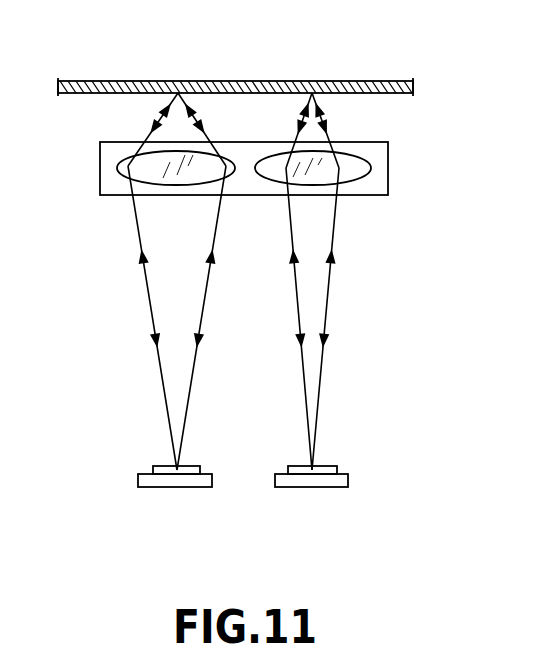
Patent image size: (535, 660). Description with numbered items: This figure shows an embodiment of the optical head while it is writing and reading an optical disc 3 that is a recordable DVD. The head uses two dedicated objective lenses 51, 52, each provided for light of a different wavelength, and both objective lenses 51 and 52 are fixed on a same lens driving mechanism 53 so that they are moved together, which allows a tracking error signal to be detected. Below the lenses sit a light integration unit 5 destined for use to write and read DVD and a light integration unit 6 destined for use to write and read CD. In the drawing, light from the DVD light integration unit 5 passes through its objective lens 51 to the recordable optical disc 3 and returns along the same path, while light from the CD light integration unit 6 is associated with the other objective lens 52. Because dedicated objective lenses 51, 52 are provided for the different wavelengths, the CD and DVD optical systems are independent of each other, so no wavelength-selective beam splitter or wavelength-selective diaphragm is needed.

The optical disc 3 is at (265, 82).
The lens driving mechanism 53 is at (389, 147).
The objective lens 51 is at (147, 173).
The objective lens 52 is at (350, 175).
The light integration unit 5 is at (186, 487).
The light integration unit 6 is at (312, 487).